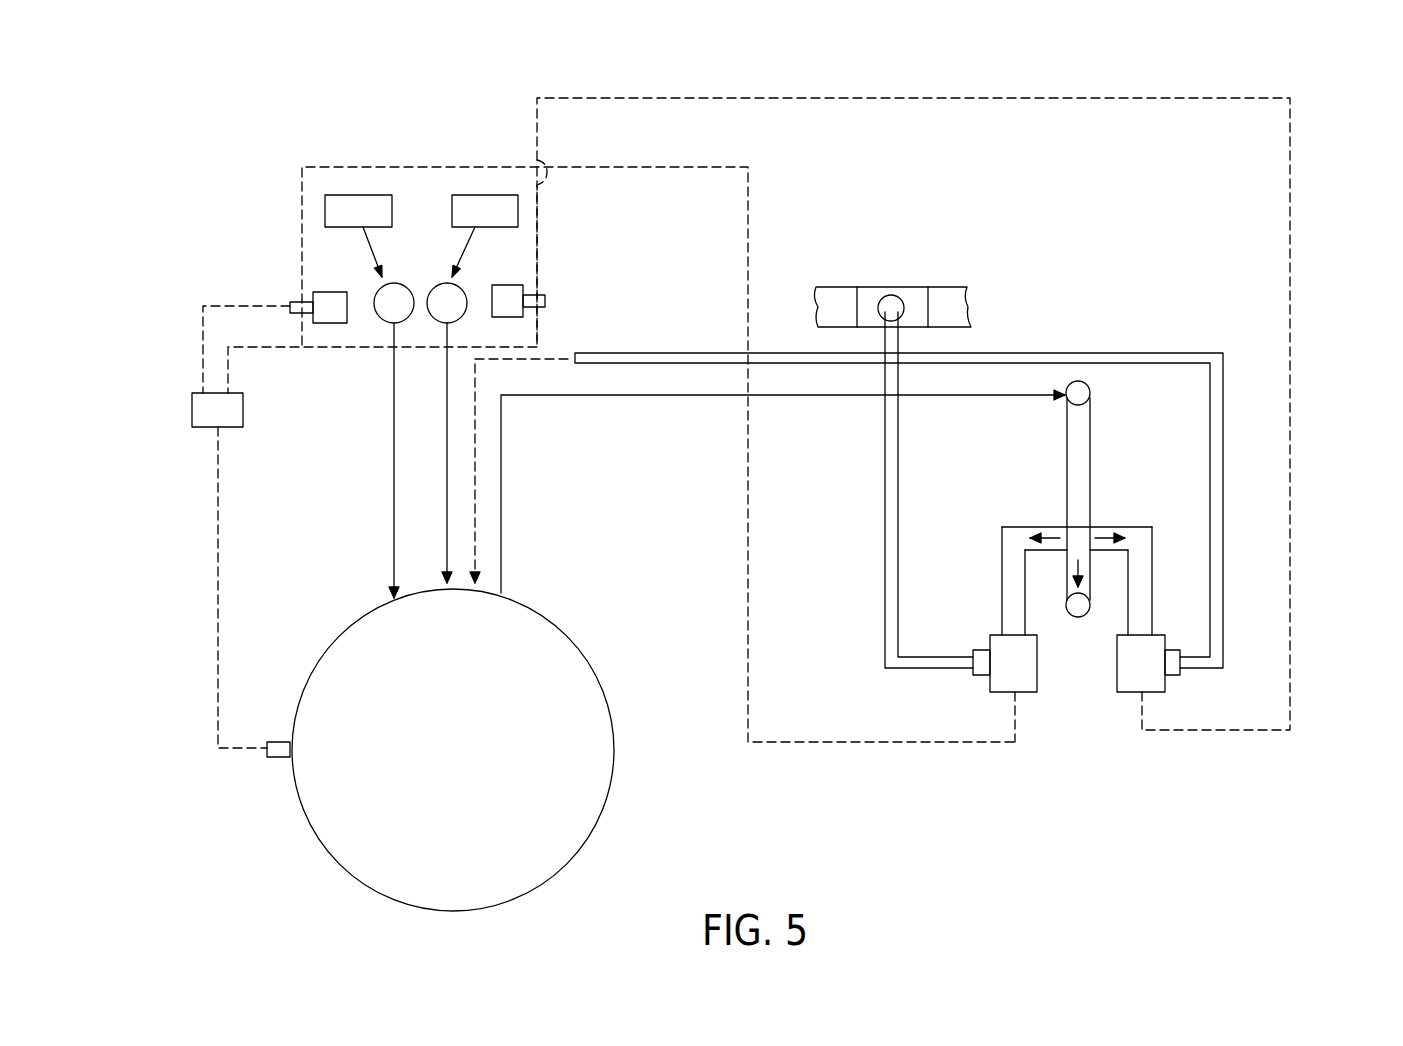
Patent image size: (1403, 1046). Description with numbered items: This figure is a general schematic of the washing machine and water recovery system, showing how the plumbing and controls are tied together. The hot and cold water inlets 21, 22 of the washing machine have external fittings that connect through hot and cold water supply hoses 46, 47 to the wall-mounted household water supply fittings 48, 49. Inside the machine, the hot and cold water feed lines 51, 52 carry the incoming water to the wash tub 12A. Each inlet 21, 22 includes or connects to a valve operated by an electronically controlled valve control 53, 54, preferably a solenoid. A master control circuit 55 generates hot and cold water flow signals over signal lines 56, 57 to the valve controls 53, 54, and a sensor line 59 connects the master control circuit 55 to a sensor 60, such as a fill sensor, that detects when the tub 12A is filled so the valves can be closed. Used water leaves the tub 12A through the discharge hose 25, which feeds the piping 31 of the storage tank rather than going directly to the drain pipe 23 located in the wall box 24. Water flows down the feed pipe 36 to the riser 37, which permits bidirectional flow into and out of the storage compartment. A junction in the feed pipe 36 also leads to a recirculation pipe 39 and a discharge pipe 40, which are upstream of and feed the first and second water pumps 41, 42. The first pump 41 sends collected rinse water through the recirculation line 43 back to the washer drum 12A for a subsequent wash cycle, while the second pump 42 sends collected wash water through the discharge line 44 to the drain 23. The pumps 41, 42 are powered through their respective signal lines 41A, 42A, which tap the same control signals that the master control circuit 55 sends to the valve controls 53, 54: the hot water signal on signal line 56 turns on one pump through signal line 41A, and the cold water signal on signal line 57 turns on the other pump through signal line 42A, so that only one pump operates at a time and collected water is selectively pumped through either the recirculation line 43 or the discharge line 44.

The wash tub 12A is at (489, 746).
The hot water inlet 21 is at (473, 285).
The cold water inlet 22 is at (365, 285).
The drain pipe 23 is at (917, 257).
The wall box 24 is at (892, 250).
The discharge hose 25 is at (767, 476).
The piping 31 is at (1105, 485).
The feed pipe 36 is at (1118, 490).
The riser 37 is at (1084, 698).
The recirculation pipe 39 is at (1165, 567).
The discharge pipe 40 is at (977, 576).
The first water pump 41 is at (1148, 713).
The second water pump 42 is at (1008, 721).
The recirculation line 43 is at (899, 452).
The discharge line 44 is at (884, 490).
The hot water supply hose 46 is at (449, 179).
The cold water supply hose 47 is at (346, 194).
The hot water supply fitting 48 is at (485, 151).
The cold water supply fitting 49 is at (364, 138).
The hot water feed line 51 is at (384, 453).
The cold water feed line 52 is at (358, 460).
The valve control 53 is at (561, 280).
The valve control 54 is at (318, 355).
The master control circuit 55 is at (197, 439).
The signal line 56 is at (323, 354).
The signal line 57 is at (227, 303).
The sensor line 59 is at (197, 587).
The sensor 60 is at (253, 787).
The signal line 41A is at (962, 414).
The signal line 42A is at (618, 487).